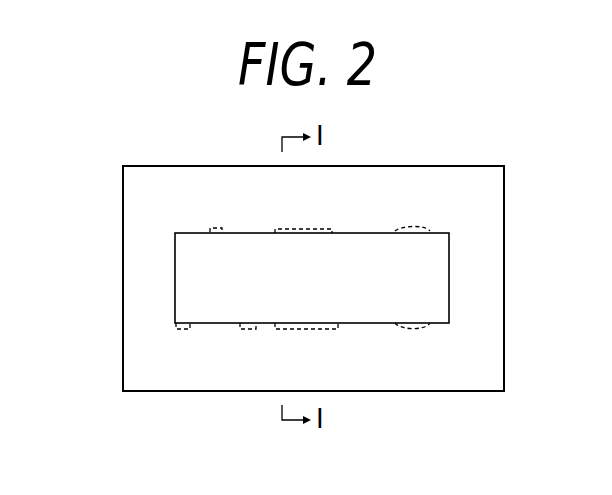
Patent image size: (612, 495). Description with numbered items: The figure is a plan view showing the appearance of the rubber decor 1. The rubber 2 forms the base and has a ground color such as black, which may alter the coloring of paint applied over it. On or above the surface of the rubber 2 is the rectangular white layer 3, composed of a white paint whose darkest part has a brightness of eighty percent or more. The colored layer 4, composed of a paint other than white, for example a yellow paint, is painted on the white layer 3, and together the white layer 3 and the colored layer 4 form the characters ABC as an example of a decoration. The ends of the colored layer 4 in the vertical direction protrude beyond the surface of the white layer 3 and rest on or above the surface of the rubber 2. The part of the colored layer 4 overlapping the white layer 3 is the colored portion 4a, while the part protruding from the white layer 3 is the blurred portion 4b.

The rubber decor 1 is at (103, 180).
The rubber 2 is at (477, 250).
The white layer 3 is at (365, 312).
The colored layer 4 is at (310, 343).
The colored portion 4a is at (338, 323).
The blurred portion 4b is at (392, 432).